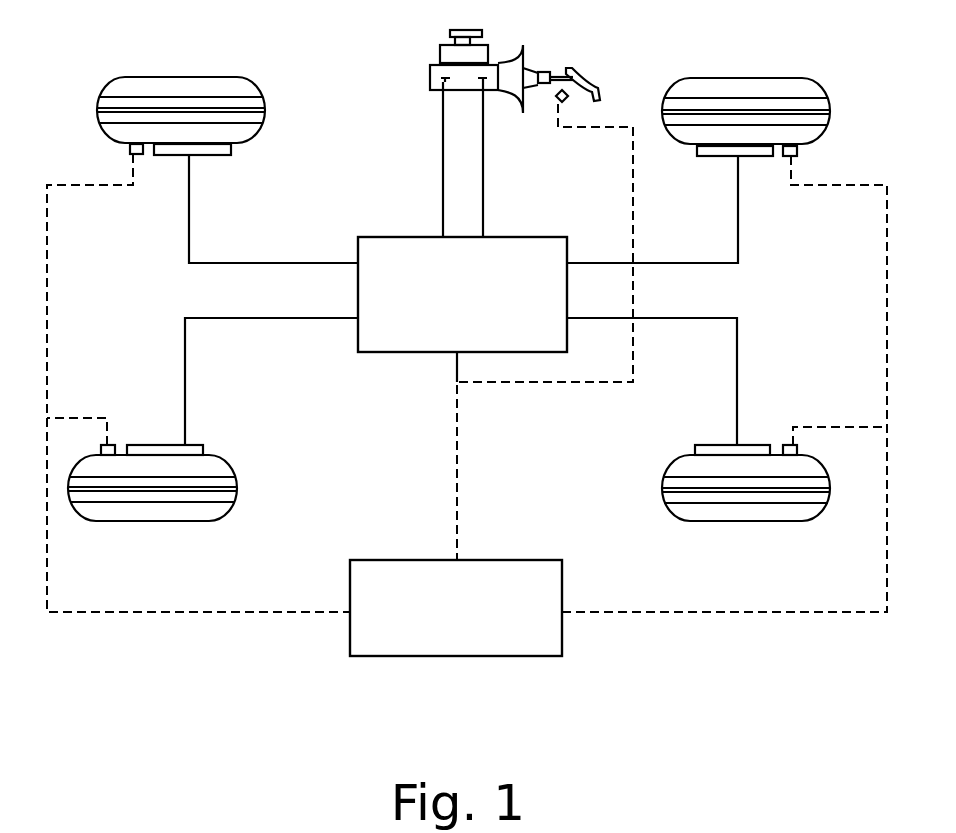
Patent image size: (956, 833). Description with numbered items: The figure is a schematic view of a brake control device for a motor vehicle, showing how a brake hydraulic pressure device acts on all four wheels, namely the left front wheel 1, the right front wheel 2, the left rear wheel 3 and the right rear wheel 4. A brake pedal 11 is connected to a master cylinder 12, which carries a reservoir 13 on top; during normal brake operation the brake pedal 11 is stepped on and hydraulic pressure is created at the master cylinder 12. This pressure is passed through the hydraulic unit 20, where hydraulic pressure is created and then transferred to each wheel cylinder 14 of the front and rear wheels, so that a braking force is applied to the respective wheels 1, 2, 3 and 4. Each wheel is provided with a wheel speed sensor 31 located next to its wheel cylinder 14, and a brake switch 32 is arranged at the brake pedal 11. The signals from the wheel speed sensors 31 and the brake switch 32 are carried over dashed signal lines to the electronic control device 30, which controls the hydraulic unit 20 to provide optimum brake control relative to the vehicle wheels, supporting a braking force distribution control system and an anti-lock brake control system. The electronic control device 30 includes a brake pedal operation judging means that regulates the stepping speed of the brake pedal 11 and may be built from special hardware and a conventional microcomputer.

The left front wheel 1 is at (160, 523).
The right front wheel 2 is at (183, 77).
The left rear wheel 3 is at (733, 523).
The right rear wheel 4 is at (753, 78).
The brake pedal 11 is at (583, 72).
The master cylinder 12 is at (430, 77).
The reservoir 13 is at (440, 53).
The wheel cylinder 14 is at (215, 156).
The hydraulic unit 20 is at (398, 352).
The electronic control device 30 is at (563, 588).
The wheel speed sensor 31 is at (146, 157).
The brake switch 32 is at (557, 102).